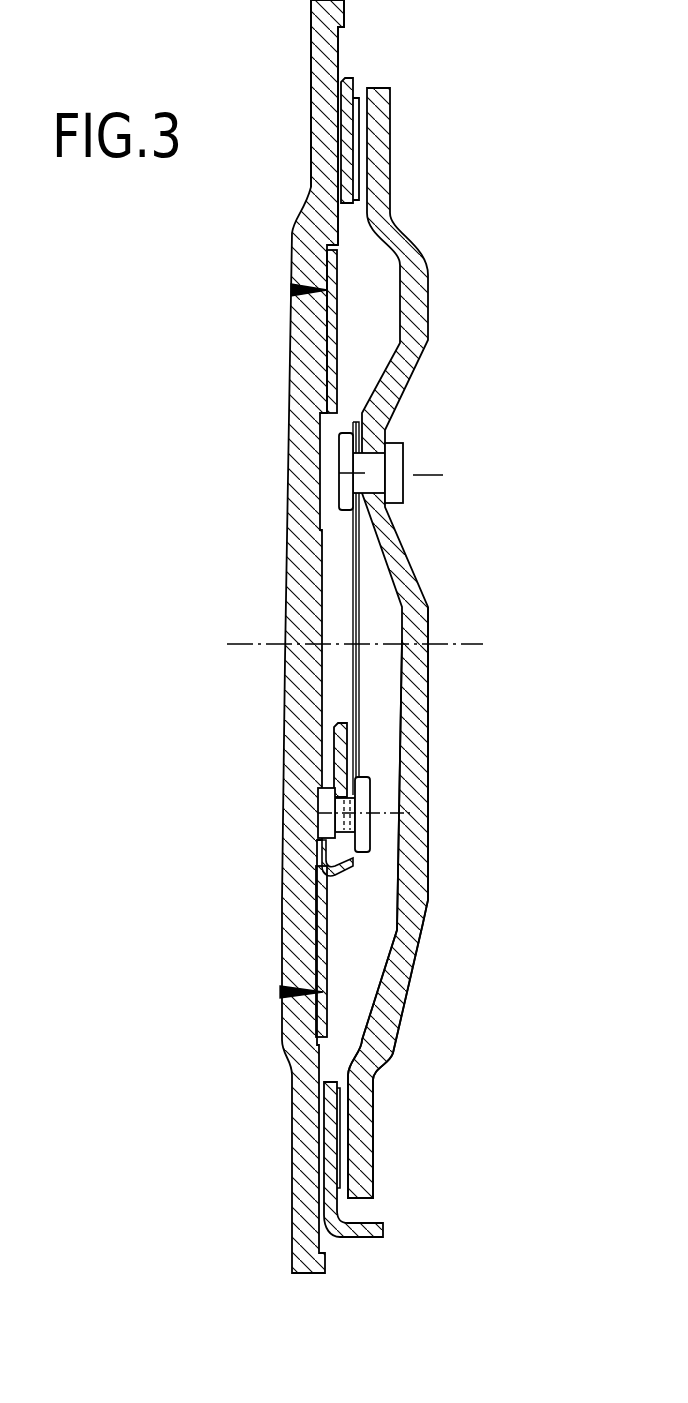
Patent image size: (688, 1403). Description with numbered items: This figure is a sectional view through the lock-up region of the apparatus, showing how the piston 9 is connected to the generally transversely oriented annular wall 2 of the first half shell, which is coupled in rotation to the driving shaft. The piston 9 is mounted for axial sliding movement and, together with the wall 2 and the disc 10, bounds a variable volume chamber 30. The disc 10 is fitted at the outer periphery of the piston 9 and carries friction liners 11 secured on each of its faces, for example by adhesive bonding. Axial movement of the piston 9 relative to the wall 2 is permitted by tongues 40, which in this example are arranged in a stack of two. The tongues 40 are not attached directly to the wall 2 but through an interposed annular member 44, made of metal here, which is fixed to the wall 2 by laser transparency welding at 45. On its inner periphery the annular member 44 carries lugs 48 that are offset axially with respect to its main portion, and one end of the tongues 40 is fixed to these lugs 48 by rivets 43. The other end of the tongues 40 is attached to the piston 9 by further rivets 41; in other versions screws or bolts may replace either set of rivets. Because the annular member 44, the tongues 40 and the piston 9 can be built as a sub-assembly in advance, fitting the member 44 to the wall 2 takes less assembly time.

The annular wall 2 is at (287, 565).
The piston 9 is at (423, 257).
The disc 10 is at (313, 53).
The friction liners 11 is at (340, 213).
The variable volume chamber 30 is at (365, 933).
The tongues 40 is at (362, 605).
The rivets 41 is at (405, 448).
The rivets 43 is at (318, 818).
The annular member 44 is at (337, 357).
The laser transparency weld 45 is at (280, 992).
The lugs 48 is at (334, 753).